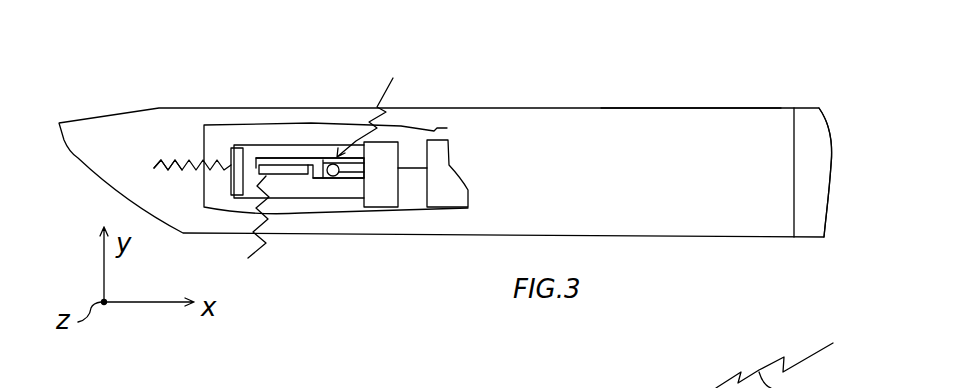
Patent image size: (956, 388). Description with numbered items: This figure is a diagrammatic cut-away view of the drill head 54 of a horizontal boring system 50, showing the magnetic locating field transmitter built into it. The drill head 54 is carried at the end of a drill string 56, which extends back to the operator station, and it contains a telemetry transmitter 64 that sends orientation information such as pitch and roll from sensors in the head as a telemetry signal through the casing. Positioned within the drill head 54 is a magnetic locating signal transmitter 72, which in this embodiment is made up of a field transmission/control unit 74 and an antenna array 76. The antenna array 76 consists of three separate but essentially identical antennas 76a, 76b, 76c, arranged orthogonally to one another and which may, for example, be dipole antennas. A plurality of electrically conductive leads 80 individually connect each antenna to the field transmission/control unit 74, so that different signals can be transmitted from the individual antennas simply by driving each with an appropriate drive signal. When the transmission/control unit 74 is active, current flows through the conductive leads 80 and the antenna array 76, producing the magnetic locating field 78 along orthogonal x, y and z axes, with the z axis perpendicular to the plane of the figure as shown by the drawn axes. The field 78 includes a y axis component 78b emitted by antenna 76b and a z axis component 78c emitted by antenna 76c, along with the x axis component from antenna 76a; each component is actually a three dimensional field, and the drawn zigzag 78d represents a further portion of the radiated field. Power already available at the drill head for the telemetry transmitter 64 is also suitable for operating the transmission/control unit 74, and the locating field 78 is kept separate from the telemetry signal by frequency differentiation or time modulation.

The system 50 is at (624, 63).
The drill head 54 is at (683, 107).
The drill string 56 is at (810, 107).
The transmitter 64 is at (436, 132).
The magnetic locating signal transmitter 72 is at (308, 136).
The field transmission/control unit 74 is at (392, 140).
The antenna array 76 is at (281, 177).
The antenna 76a is at (307, 175).
The antenna 76b is at (230, 178).
The antenna 76c is at (338, 177).
The magnetic locating field 78 is at (230, 165).
The y axis component 78b is at (183, 155).
The z axis component 78c is at (392, 78).
The spring portion 78d is at (247, 258).
The electrically conductive leads 80 is at (260, 145).